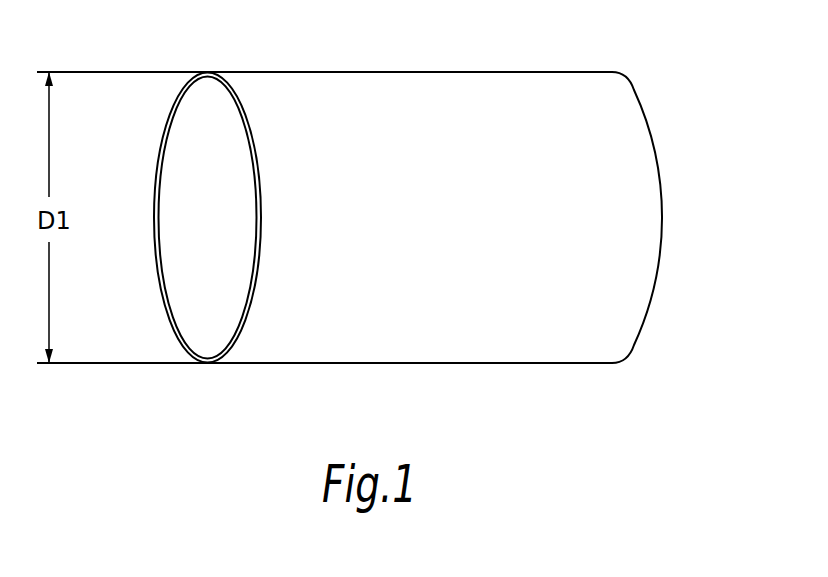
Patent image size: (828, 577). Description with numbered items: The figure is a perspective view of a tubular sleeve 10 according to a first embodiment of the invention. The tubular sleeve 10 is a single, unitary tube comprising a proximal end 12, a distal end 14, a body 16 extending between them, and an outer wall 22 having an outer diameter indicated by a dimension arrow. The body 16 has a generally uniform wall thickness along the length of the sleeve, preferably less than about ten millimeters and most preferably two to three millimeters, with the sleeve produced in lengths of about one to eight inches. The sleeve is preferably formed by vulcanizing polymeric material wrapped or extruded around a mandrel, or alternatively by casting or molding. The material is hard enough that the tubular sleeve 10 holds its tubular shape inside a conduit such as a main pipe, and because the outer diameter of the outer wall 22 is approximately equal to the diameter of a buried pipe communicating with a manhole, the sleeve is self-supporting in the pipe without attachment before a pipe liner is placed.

The tubular sleeve 10 is at (371, 203).
The proximal end 12 is at (177, 106).
The distal end 14 is at (635, 90).
The body 16 is at (445, 83).
The outer wall 22 is at (486, 345).